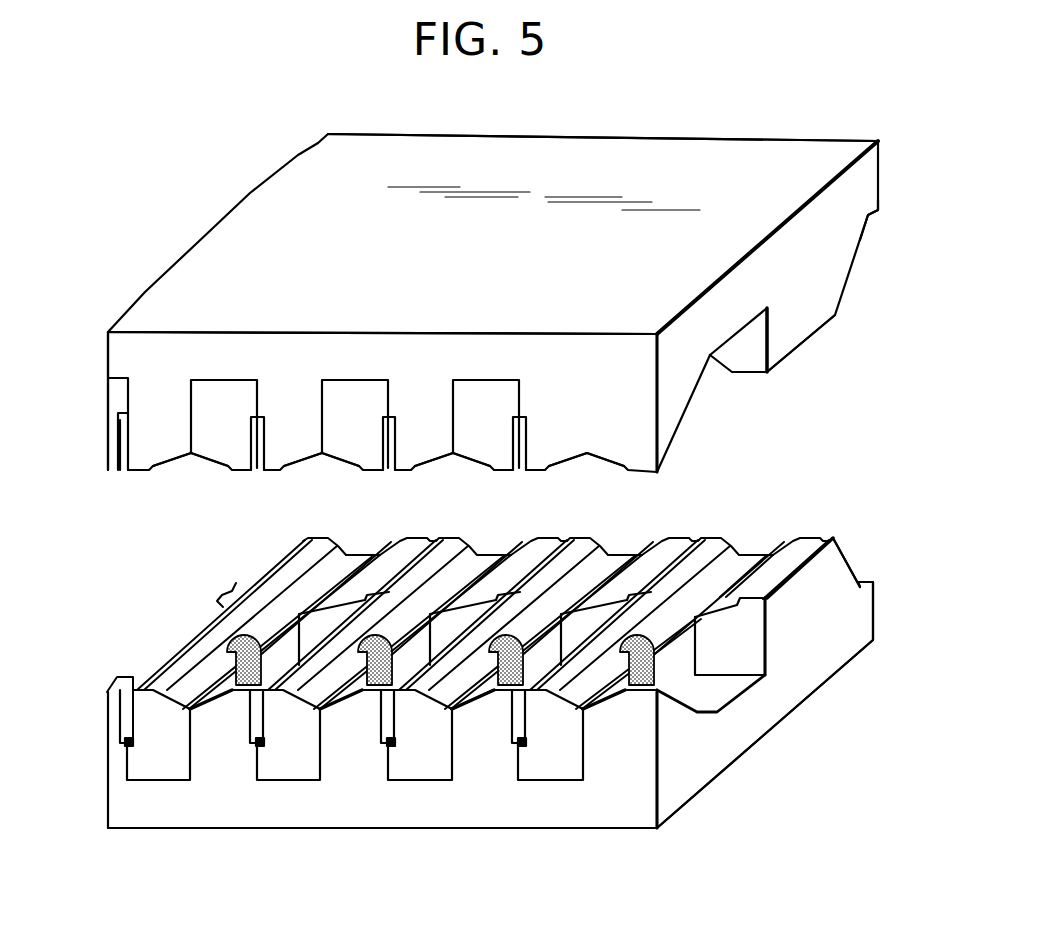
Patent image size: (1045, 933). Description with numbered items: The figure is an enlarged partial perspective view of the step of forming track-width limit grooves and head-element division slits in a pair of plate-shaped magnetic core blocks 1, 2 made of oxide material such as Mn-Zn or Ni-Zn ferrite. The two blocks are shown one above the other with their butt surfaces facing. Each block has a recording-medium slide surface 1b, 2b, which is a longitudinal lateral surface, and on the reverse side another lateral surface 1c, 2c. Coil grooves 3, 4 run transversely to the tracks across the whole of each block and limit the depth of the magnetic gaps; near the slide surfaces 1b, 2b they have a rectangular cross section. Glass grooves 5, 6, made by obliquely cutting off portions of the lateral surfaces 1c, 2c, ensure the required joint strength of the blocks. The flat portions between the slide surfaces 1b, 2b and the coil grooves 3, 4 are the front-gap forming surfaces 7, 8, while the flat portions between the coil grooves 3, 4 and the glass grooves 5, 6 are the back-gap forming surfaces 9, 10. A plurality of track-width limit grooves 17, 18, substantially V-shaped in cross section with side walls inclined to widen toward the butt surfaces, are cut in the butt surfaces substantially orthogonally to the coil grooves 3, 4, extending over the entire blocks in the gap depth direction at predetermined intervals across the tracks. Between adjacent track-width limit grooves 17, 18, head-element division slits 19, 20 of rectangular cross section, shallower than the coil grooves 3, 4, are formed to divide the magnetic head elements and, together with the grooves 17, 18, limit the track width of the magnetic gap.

The magnetic core block 1 is at (817, 667).
The recording-medium slide surface 1b is at (630, 802).
The lateral surface 1c is at (877, 612).
The magnetic core block 2 is at (842, 258).
The recording-medium slide surface 2b is at (616, 360).
The lateral surface 2c is at (880, 152).
The coil groove 3 is at (733, 688).
The coil groove 4 is at (730, 344).
The glass groove 5 is at (858, 576).
The glass groove 6 is at (875, 215).
The front-gap forming surface 7 is at (660, 685).
The front-gap forming surface 8 is at (662, 465).
The back-gap forming surface 9 is at (800, 548).
The back-gap forming surface 10 is at (807, 340).
The track-width limit groove 17 is at (180, 697).
The track-width limit groove 18 is at (173, 455).
The head-element division slit 19 is at (118, 742).
The head-element division slit 20 is at (118, 418).